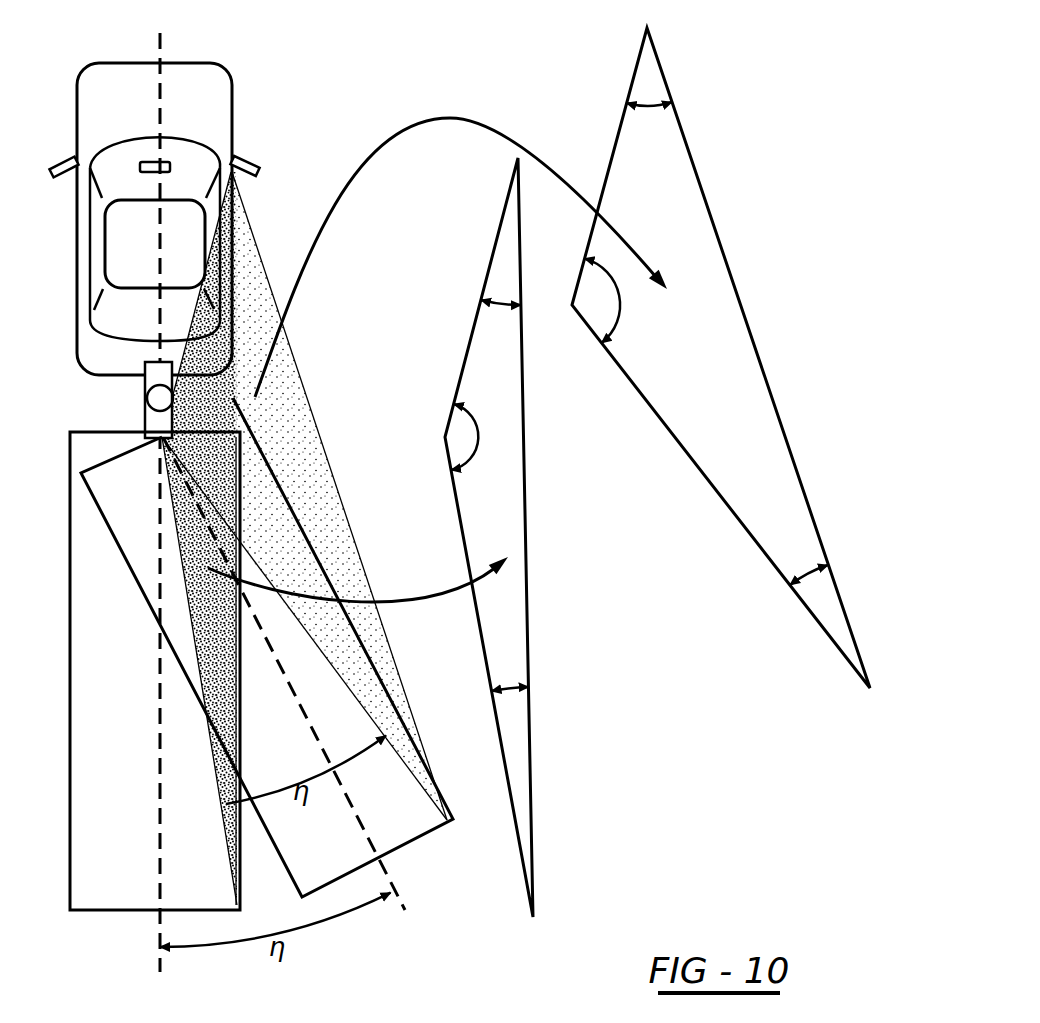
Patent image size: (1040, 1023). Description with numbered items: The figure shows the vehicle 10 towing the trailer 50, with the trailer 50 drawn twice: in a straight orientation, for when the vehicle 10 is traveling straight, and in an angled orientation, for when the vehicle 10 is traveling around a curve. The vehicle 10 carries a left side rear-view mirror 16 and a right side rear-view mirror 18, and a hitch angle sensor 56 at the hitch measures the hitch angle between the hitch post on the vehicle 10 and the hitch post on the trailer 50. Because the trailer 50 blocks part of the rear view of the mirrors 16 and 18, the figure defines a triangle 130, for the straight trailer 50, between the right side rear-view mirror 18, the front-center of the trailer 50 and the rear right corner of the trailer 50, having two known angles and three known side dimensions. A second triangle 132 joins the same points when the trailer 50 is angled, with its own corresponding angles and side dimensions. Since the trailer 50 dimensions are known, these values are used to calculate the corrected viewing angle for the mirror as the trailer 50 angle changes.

The vehicle 10 is at (232, 93).
The left side rear-view mirror 16 is at (62, 158).
The right side rear-view mirror 18 is at (245, 158).
The trailer 50 is at (70, 608).
The hitch angle sensor 56 is at (147, 393).
The triangle 130 is at (531, 693).
The triangle 132 is at (702, 183).